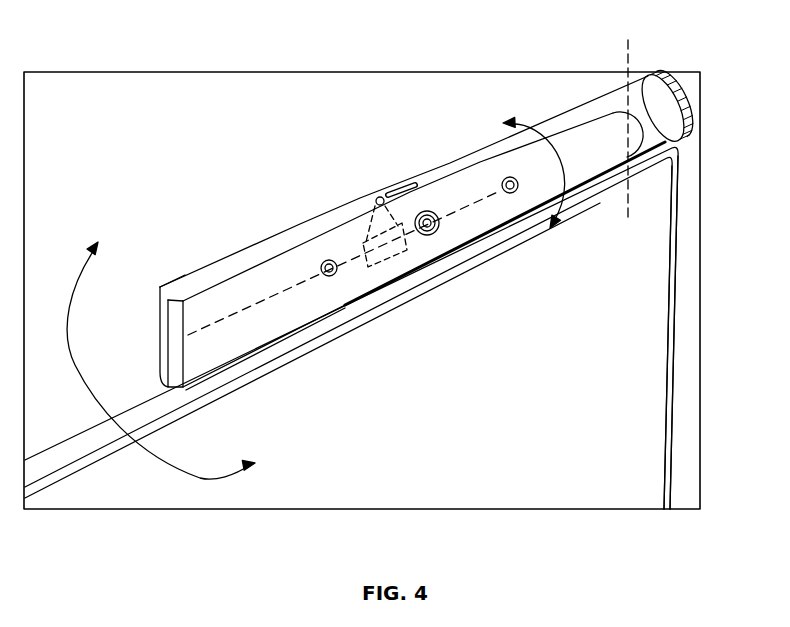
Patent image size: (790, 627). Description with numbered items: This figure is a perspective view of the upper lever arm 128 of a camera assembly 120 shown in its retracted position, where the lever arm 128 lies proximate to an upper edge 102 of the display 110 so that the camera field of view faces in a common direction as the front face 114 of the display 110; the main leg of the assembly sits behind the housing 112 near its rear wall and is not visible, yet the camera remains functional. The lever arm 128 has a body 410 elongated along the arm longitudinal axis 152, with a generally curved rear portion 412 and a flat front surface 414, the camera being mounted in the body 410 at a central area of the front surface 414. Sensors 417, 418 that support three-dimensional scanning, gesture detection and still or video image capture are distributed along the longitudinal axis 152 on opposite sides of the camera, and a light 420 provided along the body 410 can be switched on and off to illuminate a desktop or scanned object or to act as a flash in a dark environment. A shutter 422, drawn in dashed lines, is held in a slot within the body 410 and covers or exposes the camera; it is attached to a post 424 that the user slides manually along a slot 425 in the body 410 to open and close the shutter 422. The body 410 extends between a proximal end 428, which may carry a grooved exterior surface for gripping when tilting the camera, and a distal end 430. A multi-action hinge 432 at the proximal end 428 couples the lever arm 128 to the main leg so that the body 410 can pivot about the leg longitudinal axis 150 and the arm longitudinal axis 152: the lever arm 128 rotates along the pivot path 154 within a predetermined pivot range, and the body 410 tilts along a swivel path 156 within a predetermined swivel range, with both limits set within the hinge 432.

The upper edge 102 is at (91, 434).
The display 110 is at (690, 442).
The housing 112 is at (675, 487).
The front face 114 is at (546, 459).
The camera assembly 120 is at (584, 90).
The upper lever arm 128 is at (185, 268).
The leg longitudinal axis 150 is at (628, 46).
The arm longitudinal axis 152 is at (203, 334).
The pivot path 154 is at (160, 465).
The swivel path 156 is at (523, 123).
The body 410 is at (268, 252).
The curved rear portion 412 is at (465, 158).
The flat front surface 414 is at (273, 298).
The sensor 417 is at (335, 281).
The sensor 418 is at (512, 195).
The light 420 is at (168, 312).
The shutter 422 is at (365, 238).
The post 424 is at (377, 197).
The slot 425 is at (402, 187).
The proximal end 428 is at (697, 100).
The distal end 430 is at (159, 360).
The multi-action hinge 432 is at (651, 98).